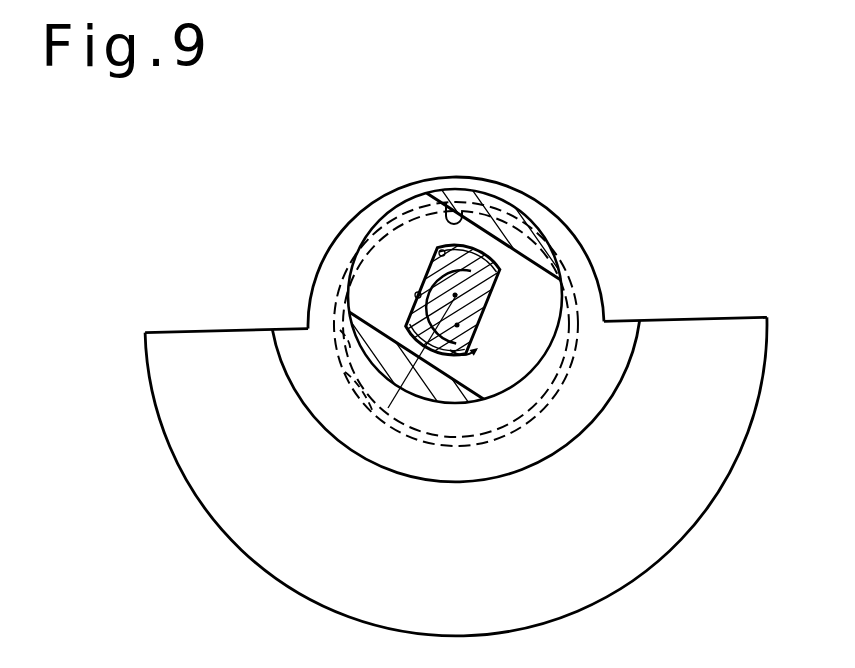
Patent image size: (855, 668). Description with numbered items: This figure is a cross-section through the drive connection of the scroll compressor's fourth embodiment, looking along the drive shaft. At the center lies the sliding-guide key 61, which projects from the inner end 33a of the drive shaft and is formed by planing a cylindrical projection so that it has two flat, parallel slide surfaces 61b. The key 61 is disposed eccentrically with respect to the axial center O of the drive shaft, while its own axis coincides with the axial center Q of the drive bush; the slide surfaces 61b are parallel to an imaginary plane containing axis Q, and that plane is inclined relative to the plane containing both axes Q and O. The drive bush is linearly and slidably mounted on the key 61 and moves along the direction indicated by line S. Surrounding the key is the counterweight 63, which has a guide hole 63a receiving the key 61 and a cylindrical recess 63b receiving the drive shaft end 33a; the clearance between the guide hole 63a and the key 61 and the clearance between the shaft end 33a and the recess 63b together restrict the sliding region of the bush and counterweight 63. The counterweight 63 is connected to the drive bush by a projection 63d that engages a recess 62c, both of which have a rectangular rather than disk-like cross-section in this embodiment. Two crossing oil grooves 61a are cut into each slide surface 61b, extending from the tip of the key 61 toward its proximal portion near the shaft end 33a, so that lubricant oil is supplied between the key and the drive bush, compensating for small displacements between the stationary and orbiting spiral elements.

The counterweight 63 is at (590, 300).
The guide hole 63a is at (418, 295).
The cylindrical recess 63b is at (345, 372).
The projection 63d is at (452, 200).
The inner end of the drive shaft 33a is at (342, 324).
The sliding-guide key 61 is at (497, 246).
The oil grooves 61a is at (497, 303).
The slide surfaces 61b is at (437, 277).
The recess 62c is at (454, 251).
The sliding direction line S is at (457, 294).
The axial center of the drive shaft O is at (465, 322).
The axial center of the drive bush Q is at (432, 283).